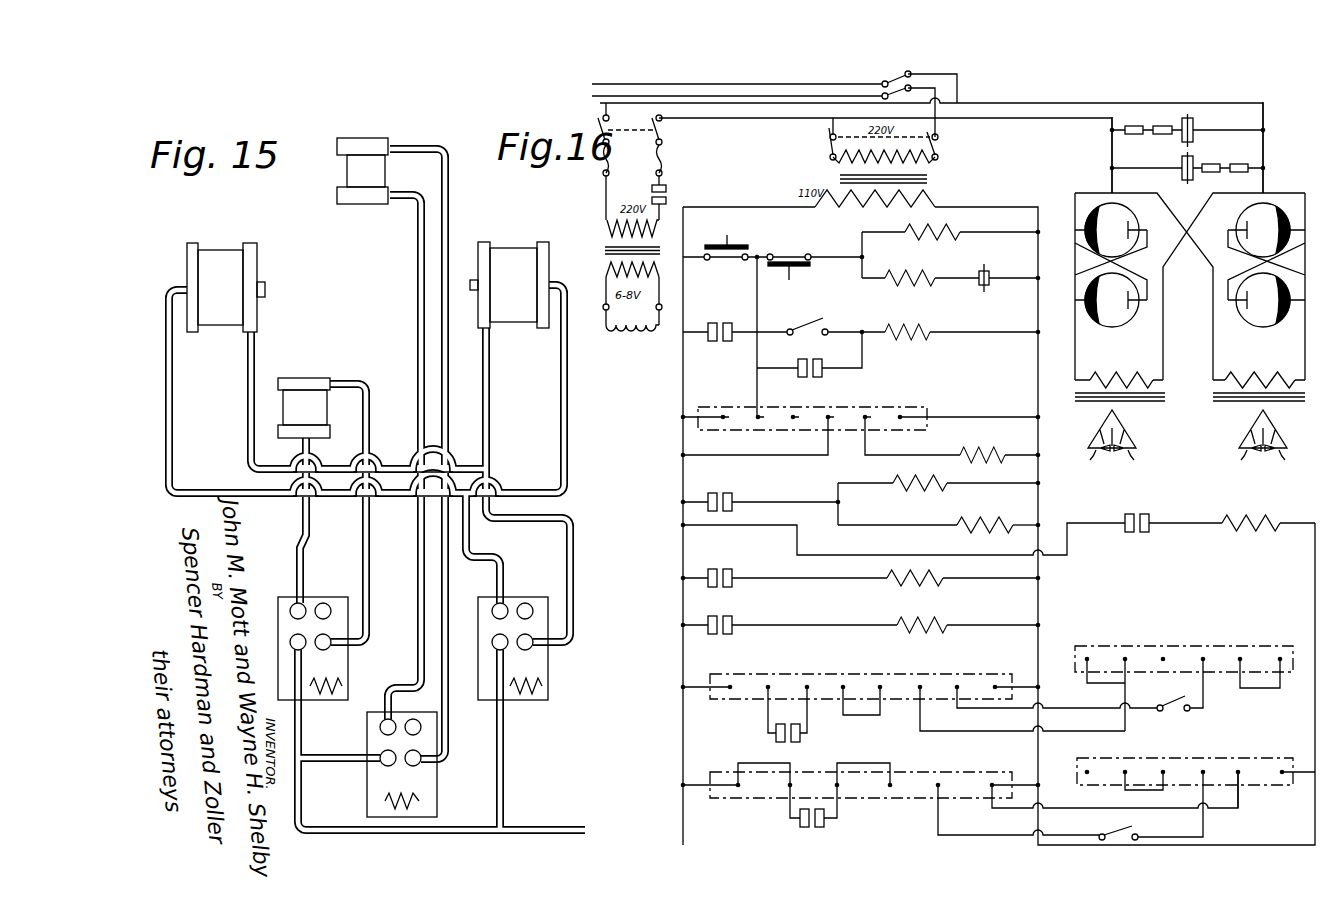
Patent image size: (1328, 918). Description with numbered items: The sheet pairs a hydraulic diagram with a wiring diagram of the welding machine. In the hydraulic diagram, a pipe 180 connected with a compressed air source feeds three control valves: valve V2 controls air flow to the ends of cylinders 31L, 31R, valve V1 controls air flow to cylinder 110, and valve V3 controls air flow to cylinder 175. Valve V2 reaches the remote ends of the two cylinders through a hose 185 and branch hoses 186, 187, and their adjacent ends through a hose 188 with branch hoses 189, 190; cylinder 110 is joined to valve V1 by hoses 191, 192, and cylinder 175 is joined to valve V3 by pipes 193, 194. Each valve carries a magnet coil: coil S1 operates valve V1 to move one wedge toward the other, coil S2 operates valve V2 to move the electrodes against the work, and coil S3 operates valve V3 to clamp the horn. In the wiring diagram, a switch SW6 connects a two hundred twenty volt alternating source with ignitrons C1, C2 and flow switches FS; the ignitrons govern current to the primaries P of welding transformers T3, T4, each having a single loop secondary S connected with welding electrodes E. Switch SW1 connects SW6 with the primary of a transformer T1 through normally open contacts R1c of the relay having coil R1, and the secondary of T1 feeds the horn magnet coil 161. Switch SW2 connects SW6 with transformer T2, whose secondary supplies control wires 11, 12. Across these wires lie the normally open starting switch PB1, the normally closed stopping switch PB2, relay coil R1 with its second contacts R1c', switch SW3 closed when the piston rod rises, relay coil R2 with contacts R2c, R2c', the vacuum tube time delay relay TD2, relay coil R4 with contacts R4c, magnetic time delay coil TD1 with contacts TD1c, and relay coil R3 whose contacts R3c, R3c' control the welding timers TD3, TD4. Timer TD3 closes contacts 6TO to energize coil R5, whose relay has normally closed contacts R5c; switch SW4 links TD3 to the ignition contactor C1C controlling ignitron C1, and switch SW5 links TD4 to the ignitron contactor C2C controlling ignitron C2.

In FIG. 15, the cylinder 175 is at (337, 173).
In FIG. 15, the pipe 194 is at (449, 186).
In FIG. 15, the pipe 193 is at (418, 231).
In FIG. 15, the cylinder 31L is at (225, 238).
In FIG. 15, the cylinder 31R is at (528, 240).
In FIG. 15, the cylinder 110 is at (311, 372).
In FIG. 15, the branch hose 190 is at (490, 401).
In FIG. 15, the branch hose 189 is at (247, 417).
In FIG. 15, the branch hose 186 is at (168, 433).
In FIG. 15, the branch hose 187 is at (563, 446).
In FIG. 15, the hose 185 is at (505, 552).
In FIG. 15, the hose 188 is at (566, 564).
In FIG. 15, the hose 192 is at (302, 533).
In FIG. 15, the hose 191 is at (363, 533).
In FIG. 15, the pipe 180 is at (563, 814).
In FIG. 15, the valve V1 is at (342, 668).
In FIG. 15, the valve V2 is at (543, 670).
In FIG. 15, the valve V3 is at (365, 792).
In FIG. 15, the magnet coil S1 is at (330, 697).
In FIG. 16, the magnet coil S1 is at (999, 447).
In FIG. 15, the magnet coil S2 is at (523, 698).
In FIG. 16, the magnet coil S2 is at (997, 536).
In FIG. 15, the magnet coil S3 is at (420, 798).
In FIG. 16, the magnet coil S3 is at (950, 240).
In FIG. 16, the switch SW6 is at (774, 102).
In FIG. 16, the switch SW1 is at (630, 127).
In FIG. 16, the switch SW2 is at (828, 142).
In FIG. 16, the switch SW3 is at (821, 320).
In FIG. 16, the switch SW4 is at (1173, 696).
In FIG. 16, the switch SW5 is at (1118, 828).
In FIG. 16, the transformer T1 is at (619, 235).
In FIG. 16, the transformer T2 is at (866, 178).
In FIG. 16, the welding transformer T3 is at (1123, 420).
In FIG. 16, the welding transformer T4 is at (1252, 420).
In FIG. 16, the horn magnet coil 161 is at (631, 345).
In FIG. 16, the wire 11 is at (684, 241).
In FIG. 16, the wire 12 is at (1038, 218).
In FIG. 16, the starting switch PB1 is at (725, 240).
In FIG. 16, the stopping switch PB2 is at (795, 250).
In FIG. 16, the magnet coil R1 is at (920, 287).
In FIG. 16, the contacts R1c is at (678, 192).
In FIG. 16, the contacts R1c' is at (720, 324).
In FIG. 16, the magnet coil R2 is at (961, 342).
In FIG. 16, the contacts R2c is at (809, 354).
In FIG. 16, the contacts R2c' is at (820, 500).
In FIG. 16, the magnet coil R3 is at (967, 638).
In FIG. 16, the contacts R3c is at (786, 725).
In FIG. 16, the contacts R3c' is at (809, 828).
In FIG. 16, the magnet coil R4 is at (965, 497).
In FIG. 16, the contacts R4c is at (785, 569).
In FIG. 16, the magnet coil R5 is at (1268, 538).
In FIG. 16, the contacts R5c is at (1003, 285).
In FIG. 16, the magnet coil TD1 is at (962, 588).
In FIG. 16, the contacts TD1c is at (790, 618).
In FIG. 16, the time delay relay TD2 is at (851, 404).
In FIG. 16, the welding sequence timer TD3 is at (898, 675).
In FIG. 16, the welding timer TD4 is at (919, 804).
In FIG. 16, the contacts 6TO is at (1134, 515).
In FIG. 16, the flow switches FS is at (1188, 147).
In FIG. 16, the ignitron C1 is at (1136, 286).
In FIG. 16, the ignitron C2 is at (1235, 286).
In FIG. 16, the ignition contactor C1C is at (1187, 645).
In FIG. 16, the ignitron contactor C2C is at (1270, 756).
In FIG. 16, the primary winding P is at (1113, 376).
In FIG. 16, the secondary winding S is at (1102, 428).
In FIG. 16, the welding electrodes E is at (1183, 469).